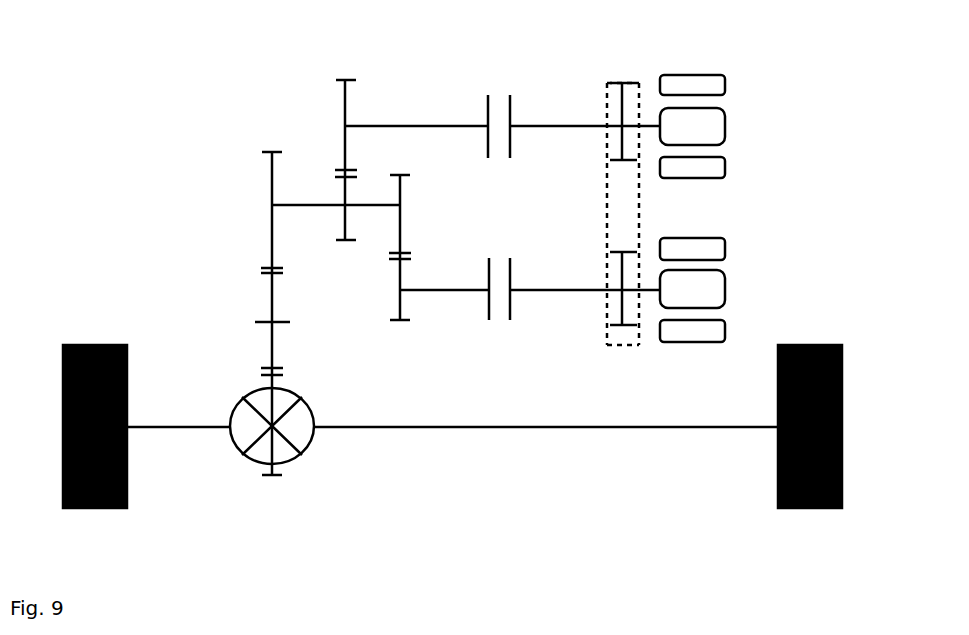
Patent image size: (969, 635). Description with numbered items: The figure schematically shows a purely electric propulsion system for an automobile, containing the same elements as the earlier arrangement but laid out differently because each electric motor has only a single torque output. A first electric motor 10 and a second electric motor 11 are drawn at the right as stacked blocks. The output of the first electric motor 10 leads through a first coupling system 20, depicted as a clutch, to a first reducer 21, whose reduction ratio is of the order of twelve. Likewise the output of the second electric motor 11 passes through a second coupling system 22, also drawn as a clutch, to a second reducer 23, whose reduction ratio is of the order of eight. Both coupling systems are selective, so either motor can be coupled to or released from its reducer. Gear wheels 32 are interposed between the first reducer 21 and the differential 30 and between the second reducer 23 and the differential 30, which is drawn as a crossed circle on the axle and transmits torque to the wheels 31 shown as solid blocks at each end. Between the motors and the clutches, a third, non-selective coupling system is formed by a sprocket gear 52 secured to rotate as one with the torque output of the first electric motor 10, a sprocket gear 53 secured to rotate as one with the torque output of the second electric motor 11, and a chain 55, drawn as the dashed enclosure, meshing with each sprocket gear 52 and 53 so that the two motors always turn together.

The first electric motor 10 is at (712, 130).
The second electric motor 11 is at (713, 292).
The first coupling system 20 is at (502, 105).
The first reducer 21 is at (345, 103).
The second coupling system 22 is at (502, 267).
The second reducer 23 is at (407, 310).
The differential 30 is at (303, 438).
The wheels 31 is at (85, 345).
The gear wheels 32 is at (268, 297).
The sprocket gear 52 is at (622, 85).
The sprocket gear 53 is at (622, 325).
The chain 55 is at (608, 195).